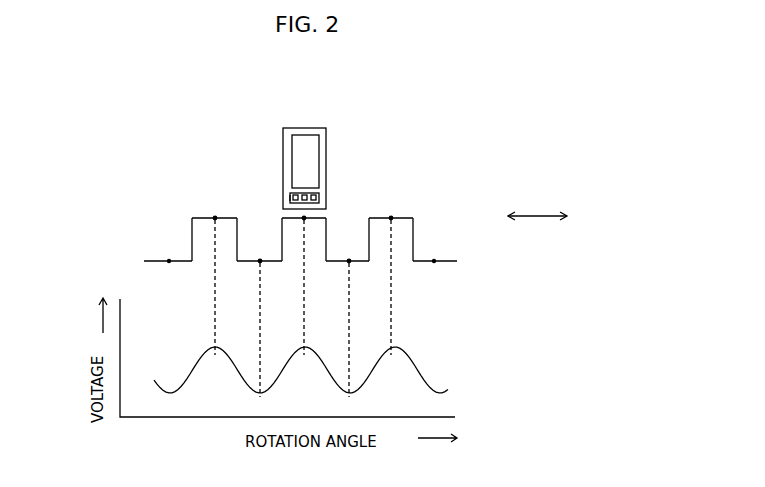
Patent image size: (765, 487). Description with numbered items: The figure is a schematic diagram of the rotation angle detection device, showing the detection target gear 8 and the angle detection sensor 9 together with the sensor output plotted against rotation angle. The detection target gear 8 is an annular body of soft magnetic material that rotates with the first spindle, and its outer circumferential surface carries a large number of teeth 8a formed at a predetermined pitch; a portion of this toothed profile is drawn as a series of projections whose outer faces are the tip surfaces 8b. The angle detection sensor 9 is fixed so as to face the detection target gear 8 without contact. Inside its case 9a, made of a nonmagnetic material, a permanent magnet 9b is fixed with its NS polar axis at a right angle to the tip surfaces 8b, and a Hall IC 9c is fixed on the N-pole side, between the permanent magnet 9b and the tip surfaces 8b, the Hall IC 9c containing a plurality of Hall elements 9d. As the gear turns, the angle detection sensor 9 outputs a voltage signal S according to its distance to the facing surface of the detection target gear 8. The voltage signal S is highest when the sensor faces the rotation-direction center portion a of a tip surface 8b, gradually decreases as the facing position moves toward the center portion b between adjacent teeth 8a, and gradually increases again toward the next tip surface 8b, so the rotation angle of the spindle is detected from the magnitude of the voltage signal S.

The detection target gear 8 is at (454, 253).
The teeth 8a is at (192, 240).
The tip surfaces 8b is at (287, 217).
The angle detection sensor 9 is at (305, 137).
The case 9a is at (326, 148).
The permanent magnet 9b is at (292, 150).
The Hall IC 9c is at (319, 197).
The Hall elements 9d is at (290, 195).
The rotation-direction center portion of the tip surface a is at (215, 218).
The center portion between the teeth b is at (260, 262).
The voltage signal S is at (412, 367).